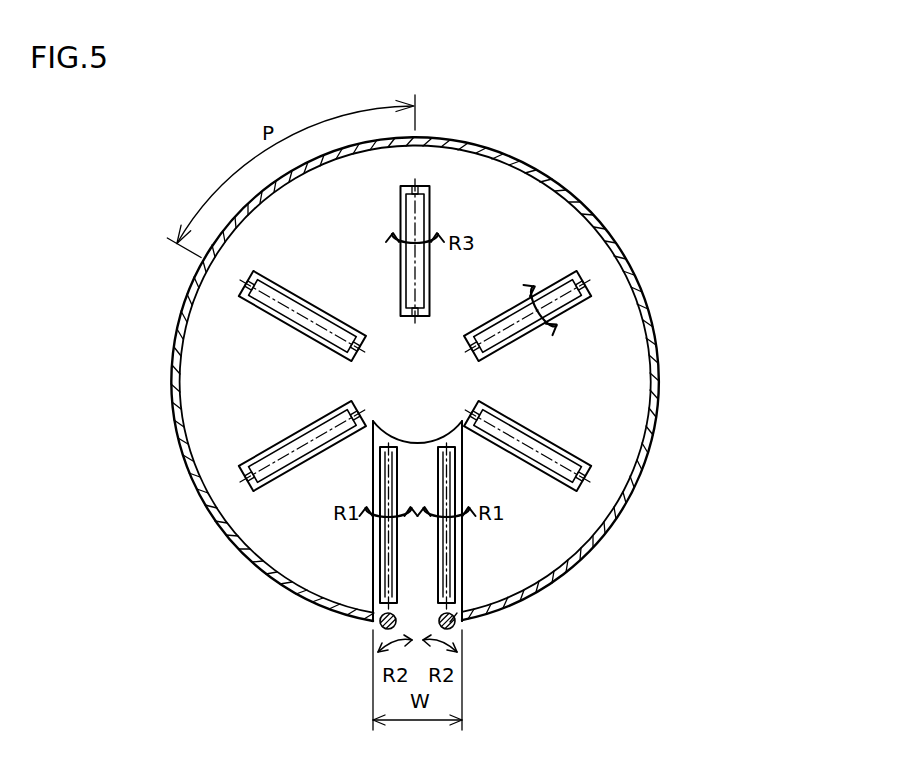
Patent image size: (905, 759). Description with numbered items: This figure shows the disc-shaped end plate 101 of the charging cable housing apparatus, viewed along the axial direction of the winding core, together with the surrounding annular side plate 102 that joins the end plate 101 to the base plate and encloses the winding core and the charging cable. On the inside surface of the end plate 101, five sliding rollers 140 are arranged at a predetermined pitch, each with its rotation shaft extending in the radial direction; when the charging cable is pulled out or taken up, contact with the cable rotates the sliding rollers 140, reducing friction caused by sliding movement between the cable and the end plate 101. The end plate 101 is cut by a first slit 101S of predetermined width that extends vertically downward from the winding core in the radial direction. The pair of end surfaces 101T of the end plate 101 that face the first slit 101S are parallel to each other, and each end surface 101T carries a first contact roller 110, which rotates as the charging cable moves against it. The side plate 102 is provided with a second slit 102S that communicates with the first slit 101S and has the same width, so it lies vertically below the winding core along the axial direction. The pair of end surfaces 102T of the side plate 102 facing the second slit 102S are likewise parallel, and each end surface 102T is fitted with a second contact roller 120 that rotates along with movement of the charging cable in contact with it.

The end plate 101 is at (548, 216).
The first slit 101S is at (417, 482).
The end surfaces 101T is at (372, 486).
The side plate 102 is at (647, 458).
The second slit 102S is at (417, 625).
The end surfaces 102T is at (370, 616).
The first contact roller 110 is at (386, 537).
The second contact roller 120 is at (395, 613).
The sliding rollers 140 is at (418, 215).